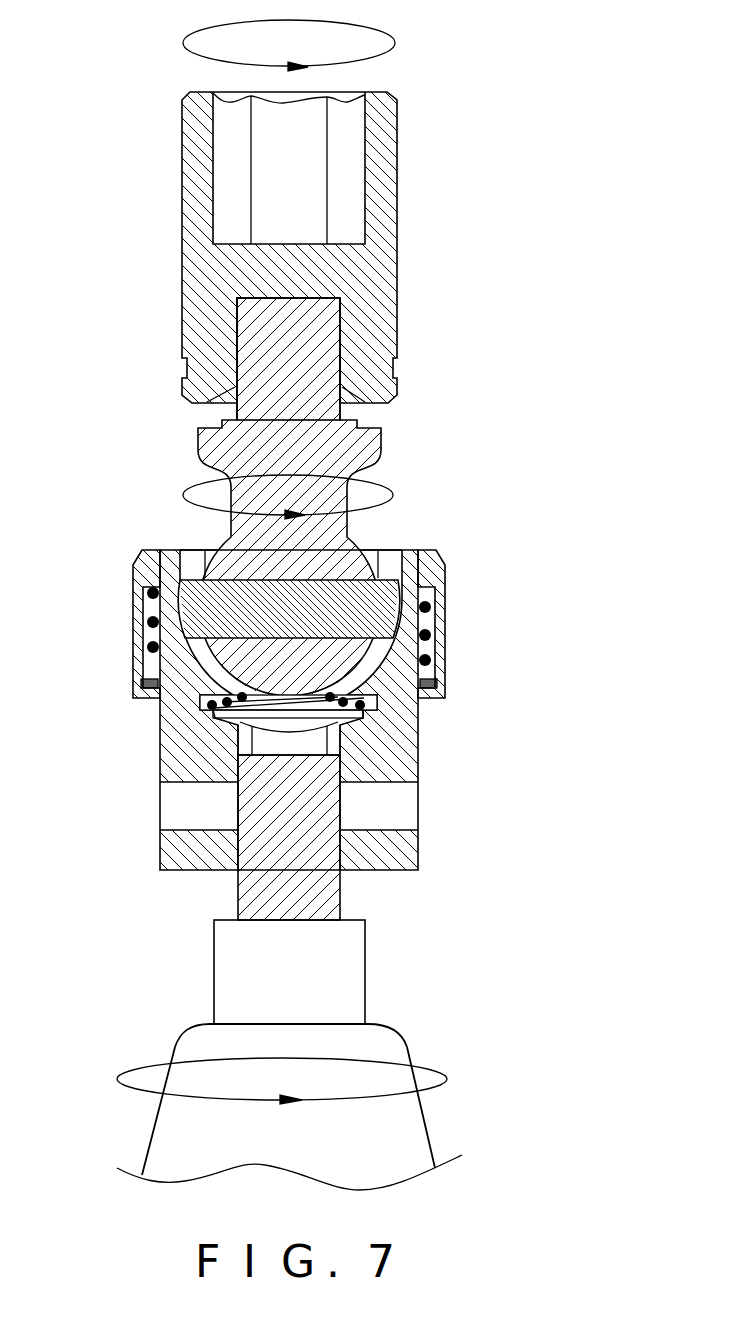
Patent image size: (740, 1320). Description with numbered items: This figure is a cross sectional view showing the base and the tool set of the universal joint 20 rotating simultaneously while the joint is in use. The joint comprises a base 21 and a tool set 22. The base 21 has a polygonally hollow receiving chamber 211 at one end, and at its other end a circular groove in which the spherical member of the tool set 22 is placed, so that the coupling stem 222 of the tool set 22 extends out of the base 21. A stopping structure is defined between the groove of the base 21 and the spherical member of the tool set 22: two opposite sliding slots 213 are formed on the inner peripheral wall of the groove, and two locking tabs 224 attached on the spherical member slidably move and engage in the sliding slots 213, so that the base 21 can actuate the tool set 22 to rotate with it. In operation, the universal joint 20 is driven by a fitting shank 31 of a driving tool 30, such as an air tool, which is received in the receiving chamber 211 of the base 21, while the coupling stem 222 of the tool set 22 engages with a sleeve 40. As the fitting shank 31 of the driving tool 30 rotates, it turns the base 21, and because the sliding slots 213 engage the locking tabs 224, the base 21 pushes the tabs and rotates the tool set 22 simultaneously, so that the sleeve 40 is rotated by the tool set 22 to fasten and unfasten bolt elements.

The universal joint 20 is at (283, 580).
The base 21 is at (294, 710).
The receiving chamber 211 is at (267, 740).
The sliding slots 213 is at (440, 563).
The tool set 22 is at (352, 494).
The coupling stem 222 is at (308, 330).
The locking tabs 224 is at (383, 618).
The driving tool 30 is at (338, 980).
The fitting shank 31 is at (325, 808).
The sleeve 40 is at (392, 147).